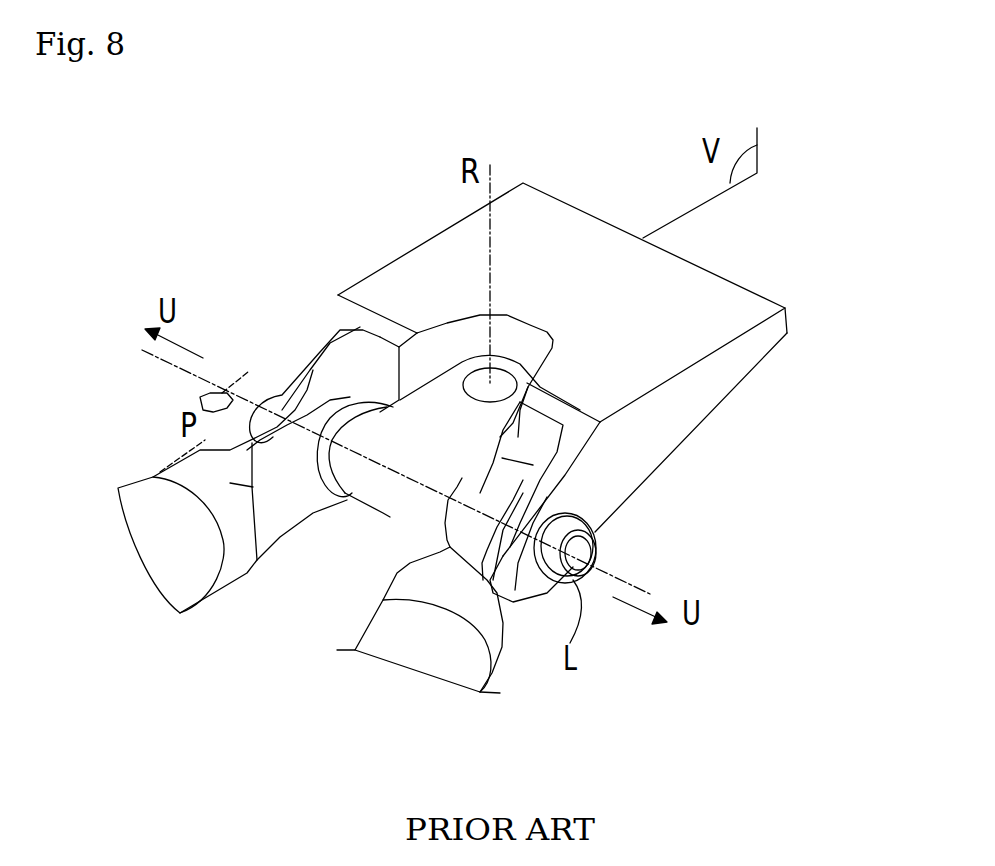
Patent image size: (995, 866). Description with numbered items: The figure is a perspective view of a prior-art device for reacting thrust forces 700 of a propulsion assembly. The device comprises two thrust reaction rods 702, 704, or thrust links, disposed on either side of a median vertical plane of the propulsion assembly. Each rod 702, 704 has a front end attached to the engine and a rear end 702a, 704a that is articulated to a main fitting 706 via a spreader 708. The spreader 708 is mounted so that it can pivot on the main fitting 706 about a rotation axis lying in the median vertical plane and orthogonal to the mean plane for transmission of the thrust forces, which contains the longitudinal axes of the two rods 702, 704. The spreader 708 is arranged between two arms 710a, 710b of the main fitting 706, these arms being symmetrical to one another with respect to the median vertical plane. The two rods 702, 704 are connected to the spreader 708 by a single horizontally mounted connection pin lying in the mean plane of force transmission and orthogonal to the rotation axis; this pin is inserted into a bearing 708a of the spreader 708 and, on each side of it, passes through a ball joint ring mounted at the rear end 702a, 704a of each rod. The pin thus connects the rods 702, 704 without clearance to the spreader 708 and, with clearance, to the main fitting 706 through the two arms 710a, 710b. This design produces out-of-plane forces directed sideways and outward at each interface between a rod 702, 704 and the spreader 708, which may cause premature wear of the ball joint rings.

The device for reacting thrust forces 700 is at (760, 231).
The thrust reaction rod 702 is at (160, 532).
The rear end of rod 702a is at (297, 400).
The thrust reaction rod 704 is at (460, 657).
The rear end of rod 704a is at (560, 470).
The main fitting 706 is at (718, 370).
The spreader 708 is at (443, 415).
The bearing of the spreader 708a is at (347, 497).
The arm of the main fitting 710a is at (308, 358).
The arm of the main fitting 710b is at (560, 467).